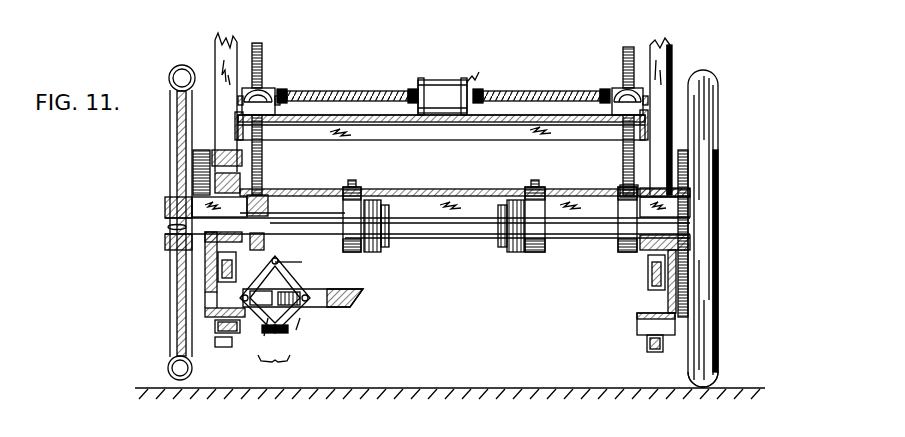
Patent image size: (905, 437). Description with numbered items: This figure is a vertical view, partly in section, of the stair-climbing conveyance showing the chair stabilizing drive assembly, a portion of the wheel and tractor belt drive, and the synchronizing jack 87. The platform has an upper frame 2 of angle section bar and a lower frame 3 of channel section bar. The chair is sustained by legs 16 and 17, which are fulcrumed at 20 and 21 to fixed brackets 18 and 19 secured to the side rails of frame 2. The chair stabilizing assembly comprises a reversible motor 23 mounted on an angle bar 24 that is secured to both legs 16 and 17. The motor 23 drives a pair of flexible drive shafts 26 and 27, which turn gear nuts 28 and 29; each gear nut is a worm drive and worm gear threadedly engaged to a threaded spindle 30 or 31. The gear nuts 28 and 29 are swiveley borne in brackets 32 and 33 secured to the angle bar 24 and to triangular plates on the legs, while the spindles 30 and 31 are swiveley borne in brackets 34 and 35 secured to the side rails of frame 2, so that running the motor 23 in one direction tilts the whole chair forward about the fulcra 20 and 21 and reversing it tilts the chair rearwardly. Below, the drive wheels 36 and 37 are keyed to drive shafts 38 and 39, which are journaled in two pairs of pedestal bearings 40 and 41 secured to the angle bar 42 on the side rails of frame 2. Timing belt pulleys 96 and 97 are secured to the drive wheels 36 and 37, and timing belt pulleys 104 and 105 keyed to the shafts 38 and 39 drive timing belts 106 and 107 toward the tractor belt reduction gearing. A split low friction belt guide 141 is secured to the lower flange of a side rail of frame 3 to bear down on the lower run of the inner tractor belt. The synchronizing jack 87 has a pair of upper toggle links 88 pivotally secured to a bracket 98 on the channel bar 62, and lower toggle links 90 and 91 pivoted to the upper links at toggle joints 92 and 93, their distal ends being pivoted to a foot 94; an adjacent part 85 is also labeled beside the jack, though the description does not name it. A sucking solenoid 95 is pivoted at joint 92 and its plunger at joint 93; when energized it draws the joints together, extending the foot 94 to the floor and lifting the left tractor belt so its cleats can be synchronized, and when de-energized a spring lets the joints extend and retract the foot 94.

The upper frame 2 is at (167, 202).
The lower frame 3 is at (667, 302).
The chair sustaining leg 16 is at (208, 160).
The chair sustaining leg 17 is at (672, 46).
The fixed bracket 18 is at (192, 183).
The fixed bracket 19 is at (690, 182).
The fulcrum 20 is at (182, 182).
The fulcrum 21 is at (698, 165).
The reversible motor 23 is at (434, 78).
The angle bar 24 is at (390, 128).
The flexible drive shaft 26 is at (378, 65).
The flexible drive shaft 27 is at (531, 88).
The gear nut 28 is at (270, 90).
The gear nut 29 is at (618, 88).
The threaded spindle 30 is at (262, 48).
The threaded spindle 31 is at (623, 46).
The bracket 32 is at (289, 120).
The bracket 33 is at (596, 120).
The bracket 34 is at (266, 195).
The bracket 35 is at (622, 186).
The drive wheel 36 is at (168, 352).
The drive wheel 37 is at (718, 352).
The drive shaft 38 is at (163, 222).
The drive shaft 39 is at (567, 228).
The pedestal bearing 40 is at (266, 243).
The pedestal bearing 41 is at (533, 252).
The angle bar 42 is at (490, 193).
The channel bar 62 is at (313, 308).
The support block 85 is at (262, 266).
The synchronizing jack 87 is at (274, 371).
The upper toggle link 88 is at (295, 268).
The lower toggle link 90 is at (258, 334).
The lower toggle link 91 is at (282, 337).
The toggle joint 92 is at (255, 328).
The toggle joint 93 is at (328, 290).
The foot 94 is at (264, 320).
The sucking solenoid 95 is at (305, 326).
The timing belt pulley 96 is at (195, 72).
The timing belt pulley 97 is at (683, 145).
The bracket 98 is at (325, 193).
The timing belt pulley 104 is at (380, 222).
The timing belt pulley 105 is at (507, 247).
The timing belt 106 is at (368, 252).
The timing belt 107 is at (513, 255).
The split low friction belt guide 141 is at (637, 328).